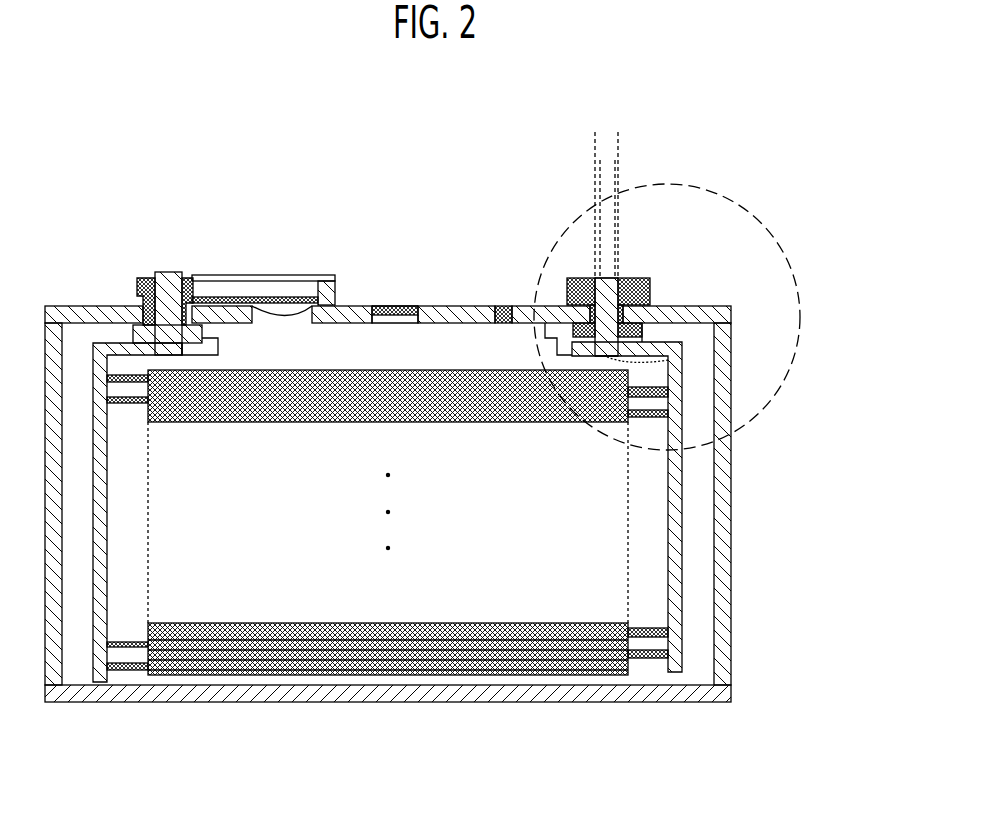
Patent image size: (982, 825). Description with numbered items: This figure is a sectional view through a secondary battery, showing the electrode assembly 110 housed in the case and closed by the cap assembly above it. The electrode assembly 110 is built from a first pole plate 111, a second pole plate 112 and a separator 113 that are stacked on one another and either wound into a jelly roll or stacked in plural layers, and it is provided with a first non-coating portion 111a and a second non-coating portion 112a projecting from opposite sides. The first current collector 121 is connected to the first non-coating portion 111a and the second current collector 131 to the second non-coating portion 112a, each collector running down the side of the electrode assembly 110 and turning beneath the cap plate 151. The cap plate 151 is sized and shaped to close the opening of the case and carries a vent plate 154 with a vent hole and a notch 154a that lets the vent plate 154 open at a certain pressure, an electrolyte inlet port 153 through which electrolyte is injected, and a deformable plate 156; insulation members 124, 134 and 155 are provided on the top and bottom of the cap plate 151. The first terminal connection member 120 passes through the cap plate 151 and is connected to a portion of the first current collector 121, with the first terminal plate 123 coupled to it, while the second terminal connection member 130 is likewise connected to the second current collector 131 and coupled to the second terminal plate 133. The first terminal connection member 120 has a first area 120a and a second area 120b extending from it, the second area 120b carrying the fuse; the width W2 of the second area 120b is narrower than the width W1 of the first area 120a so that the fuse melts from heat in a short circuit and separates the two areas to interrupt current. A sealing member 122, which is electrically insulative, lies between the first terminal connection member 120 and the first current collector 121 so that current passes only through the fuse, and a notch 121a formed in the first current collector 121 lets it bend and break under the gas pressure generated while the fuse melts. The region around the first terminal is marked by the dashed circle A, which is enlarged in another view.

The electrode assembly 110 is at (463, 685).
The first pole plate 111 is at (563, 657).
The first non-coating portion 111a is at (657, 660).
The second pole plate 112 is at (227, 660).
The second non-coating portion 112a is at (127, 660).
The separator 113 is at (395, 672).
The first terminal connection member 120 is at (847, 262).
The first area 120a is at (663, 322).
The second area 120b is at (607, 357).
The first current collector 121 is at (682, 377).
The notch 121a is at (658, 350).
The sealing member 122 is at (567, 278).
The first terminal plate 123 is at (645, 278).
The insulation member 124 is at (707, 333).
The second terminal connection member 130 is at (167, 280).
The second current collector 131 is at (110, 345).
The second terminal plate 133 is at (188, 276).
The insulation member 134 is at (218, 340).
The cap plate 151 is at (348, 318).
The electrolyte inlet port 153 is at (497, 306).
The vent plate 154 is at (417, 306).
The notch 154a is at (388, 306).
The insulation member 155 is at (238, 288).
The deformable plate 156 is at (287, 312).
The width of first area W1 is at (572, 136).
The width of second area W2 is at (572, 163).
The enlarged region A is at (667, 317).